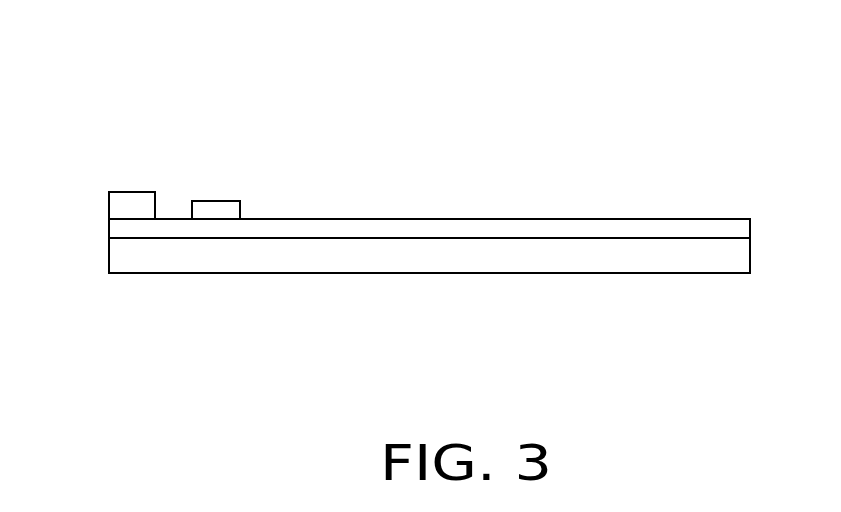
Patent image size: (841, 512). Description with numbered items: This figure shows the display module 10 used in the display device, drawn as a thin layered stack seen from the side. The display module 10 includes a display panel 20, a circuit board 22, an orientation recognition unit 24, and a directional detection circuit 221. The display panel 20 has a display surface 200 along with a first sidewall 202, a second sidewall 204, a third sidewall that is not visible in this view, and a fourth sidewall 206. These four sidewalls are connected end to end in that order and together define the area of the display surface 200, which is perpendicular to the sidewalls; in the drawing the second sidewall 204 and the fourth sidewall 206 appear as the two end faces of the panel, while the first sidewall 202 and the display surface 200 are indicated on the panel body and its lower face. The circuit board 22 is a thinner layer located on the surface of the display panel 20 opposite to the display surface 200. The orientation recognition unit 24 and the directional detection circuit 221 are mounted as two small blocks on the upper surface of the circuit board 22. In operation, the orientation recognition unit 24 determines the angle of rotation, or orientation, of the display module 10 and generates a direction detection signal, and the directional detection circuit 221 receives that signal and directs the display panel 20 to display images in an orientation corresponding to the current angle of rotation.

The display module 10 is at (515, 75).
The display panel 20 is at (727, 258).
The circuit board 22 is at (717, 227).
The orientation recognition unit 24 is at (126, 207).
The directional detection circuit 221 is at (217, 212).
The display surface 200 is at (617, 274).
The first sidewall 202 is at (171, 258).
The second sidewall 204 is at (109, 255).
The fourth sidewall 206 is at (752, 268).